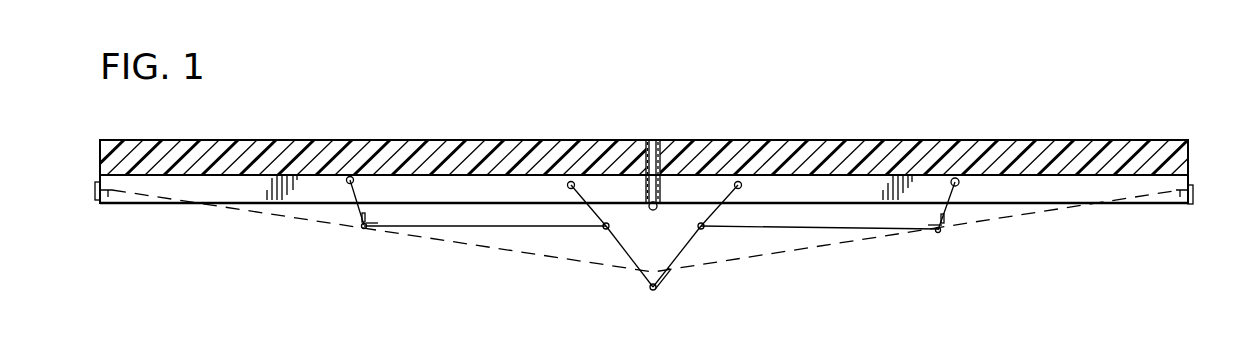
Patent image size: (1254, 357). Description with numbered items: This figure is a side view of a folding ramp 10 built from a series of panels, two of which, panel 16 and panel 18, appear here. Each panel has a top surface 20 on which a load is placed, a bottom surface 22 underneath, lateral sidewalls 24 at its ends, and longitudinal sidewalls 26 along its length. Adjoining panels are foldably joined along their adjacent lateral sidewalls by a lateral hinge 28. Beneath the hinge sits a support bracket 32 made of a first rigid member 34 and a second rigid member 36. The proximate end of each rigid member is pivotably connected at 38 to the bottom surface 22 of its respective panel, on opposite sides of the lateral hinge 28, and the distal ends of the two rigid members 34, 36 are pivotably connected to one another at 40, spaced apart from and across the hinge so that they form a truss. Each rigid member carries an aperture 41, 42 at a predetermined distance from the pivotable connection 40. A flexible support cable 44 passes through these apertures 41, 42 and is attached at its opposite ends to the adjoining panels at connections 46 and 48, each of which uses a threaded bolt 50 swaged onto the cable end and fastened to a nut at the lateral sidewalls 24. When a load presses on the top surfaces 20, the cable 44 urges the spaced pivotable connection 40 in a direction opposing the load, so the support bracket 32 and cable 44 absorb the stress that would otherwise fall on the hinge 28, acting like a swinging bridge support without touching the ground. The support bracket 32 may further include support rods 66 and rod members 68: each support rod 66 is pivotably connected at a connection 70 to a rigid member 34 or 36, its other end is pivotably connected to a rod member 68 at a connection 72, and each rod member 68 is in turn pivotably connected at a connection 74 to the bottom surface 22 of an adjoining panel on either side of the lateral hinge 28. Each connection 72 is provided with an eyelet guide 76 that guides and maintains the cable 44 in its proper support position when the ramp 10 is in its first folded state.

The ramp 10 is at (277, 229).
The panel 16 is at (453, 148).
The panel 18 is at (1045, 150).
The top surface 20 is at (247, 140).
The bottom surface 22 is at (240, 174).
The lateral sidewalls 24 is at (100, 158).
The longitudinal sidewalls 26 is at (348, 152).
The lateral hinge 28 is at (655, 140).
The support bracket 32 is at (703, 246).
The first rigid member 34 is at (611, 236).
The second rigid member 36 is at (718, 207).
The pivotable connection 38 is at (570, 182).
The pivotable connection 40 is at (653, 292).
The aperture 41 is at (637, 270).
The aperture 42 is at (672, 275).
The flexible support cable 44 is at (462, 246).
The connection 46 is at (96, 200).
The connection 48 is at (1193, 203).
The threaded bolt 50 is at (112, 196).
The support rod 66 is at (425, 226).
The rod member 68 is at (360, 207).
The pivotable connection 70 is at (606, 223).
The pivotable connection 72 is at (361, 229).
The pivotable connection 74 is at (350, 178).
The eyelet guide 76 is at (366, 230).